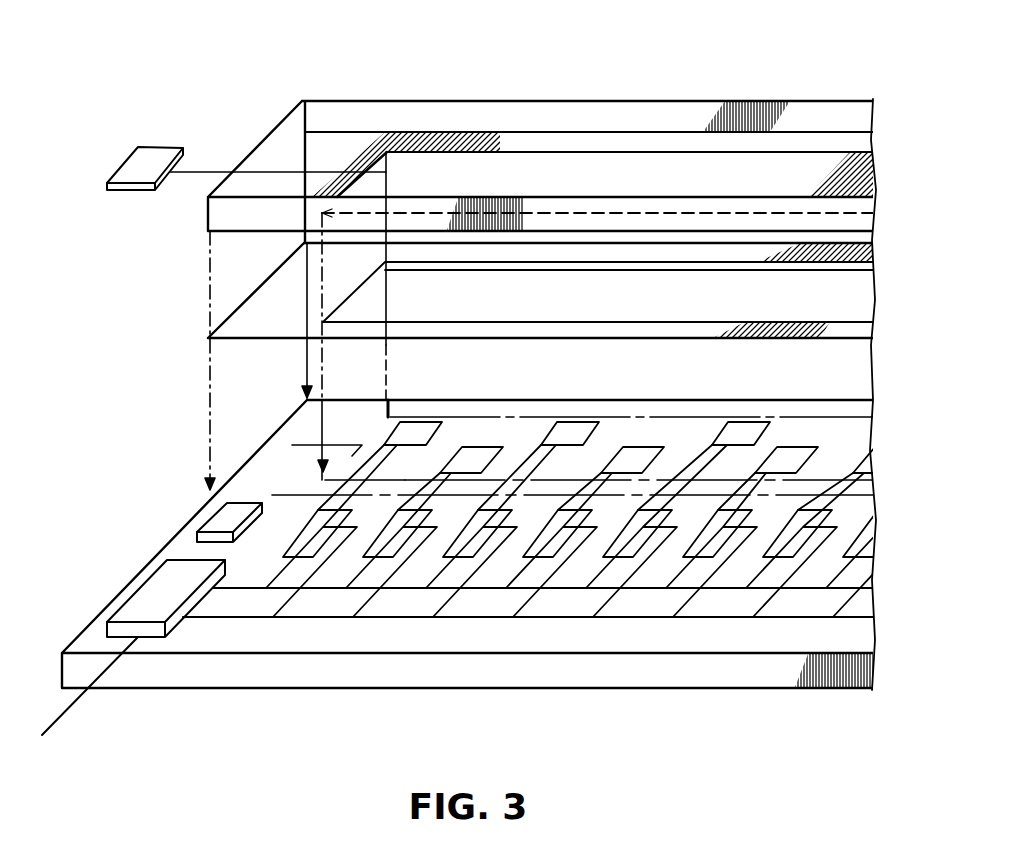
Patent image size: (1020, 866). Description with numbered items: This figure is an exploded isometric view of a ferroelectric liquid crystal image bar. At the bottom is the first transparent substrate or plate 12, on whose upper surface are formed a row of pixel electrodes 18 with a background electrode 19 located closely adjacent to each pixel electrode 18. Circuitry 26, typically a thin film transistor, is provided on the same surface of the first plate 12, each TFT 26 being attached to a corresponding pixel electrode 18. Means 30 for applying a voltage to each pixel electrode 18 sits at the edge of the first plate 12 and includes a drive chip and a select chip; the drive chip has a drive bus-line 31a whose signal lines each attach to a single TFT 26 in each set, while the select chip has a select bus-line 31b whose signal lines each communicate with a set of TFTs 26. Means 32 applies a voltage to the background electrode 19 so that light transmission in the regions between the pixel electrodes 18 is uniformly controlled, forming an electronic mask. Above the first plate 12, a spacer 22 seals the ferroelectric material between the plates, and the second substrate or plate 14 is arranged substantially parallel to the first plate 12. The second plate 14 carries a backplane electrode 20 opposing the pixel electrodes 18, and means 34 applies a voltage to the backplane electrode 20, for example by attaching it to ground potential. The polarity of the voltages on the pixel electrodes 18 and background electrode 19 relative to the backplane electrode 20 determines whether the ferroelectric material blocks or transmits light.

The first transparent substrate or plate 12 is at (518, 688).
The second substrate or plate 14 is at (470, 100).
The pixel electrode 18 is at (786, 446).
The background electrode 19 is at (480, 446).
The backplane electrode 20 is at (385, 152).
The spacer 22 is at (287, 268).
The circuitry (thin film transistor) 26 is at (378, 558).
The means for applying a voltage to each pixel electrode 30 is at (177, 573).
The drive bus-line 31a is at (327, 590).
The select bus-line 31b is at (233, 622).
The means for applying a voltage to the background electrode 32 is at (213, 523).
The means for applying a voltage to backplane electrode 34 is at (152, 158).